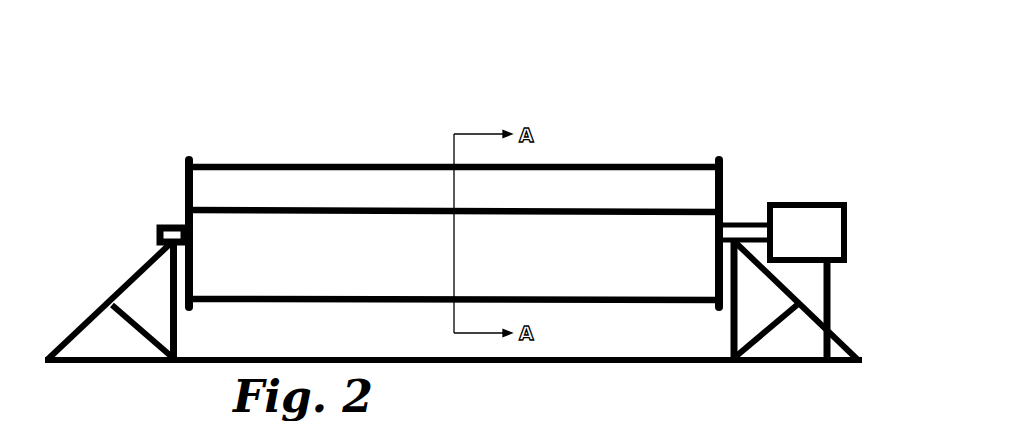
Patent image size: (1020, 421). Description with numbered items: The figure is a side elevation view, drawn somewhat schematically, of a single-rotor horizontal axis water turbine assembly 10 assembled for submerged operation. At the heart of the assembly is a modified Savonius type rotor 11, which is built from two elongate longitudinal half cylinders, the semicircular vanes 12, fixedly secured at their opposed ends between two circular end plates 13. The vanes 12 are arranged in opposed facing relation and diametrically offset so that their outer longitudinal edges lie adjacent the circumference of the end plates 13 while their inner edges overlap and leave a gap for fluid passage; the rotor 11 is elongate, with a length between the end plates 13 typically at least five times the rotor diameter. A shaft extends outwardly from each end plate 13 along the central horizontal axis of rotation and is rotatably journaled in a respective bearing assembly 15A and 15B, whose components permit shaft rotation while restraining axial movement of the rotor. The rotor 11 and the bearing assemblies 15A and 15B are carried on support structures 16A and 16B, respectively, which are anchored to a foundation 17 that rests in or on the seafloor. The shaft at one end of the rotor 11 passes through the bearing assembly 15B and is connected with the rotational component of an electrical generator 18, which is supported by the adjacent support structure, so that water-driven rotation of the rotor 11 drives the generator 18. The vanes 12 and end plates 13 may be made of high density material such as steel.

The horizontal axis water turbine assembly 10 is at (667, 132).
The modified Savonius type rotor 11 is at (273, 163).
The semicircular vanes 12 is at (399, 197).
The circular end plates 13 is at (187, 183).
The bearing assembly 15A is at (168, 222).
The bearing assembly 15B is at (743, 222).
The support structure 16A is at (97, 308).
The support structure 16B is at (843, 338).
The foundation 17 is at (367, 358).
The electrical generator 18 is at (813, 243).